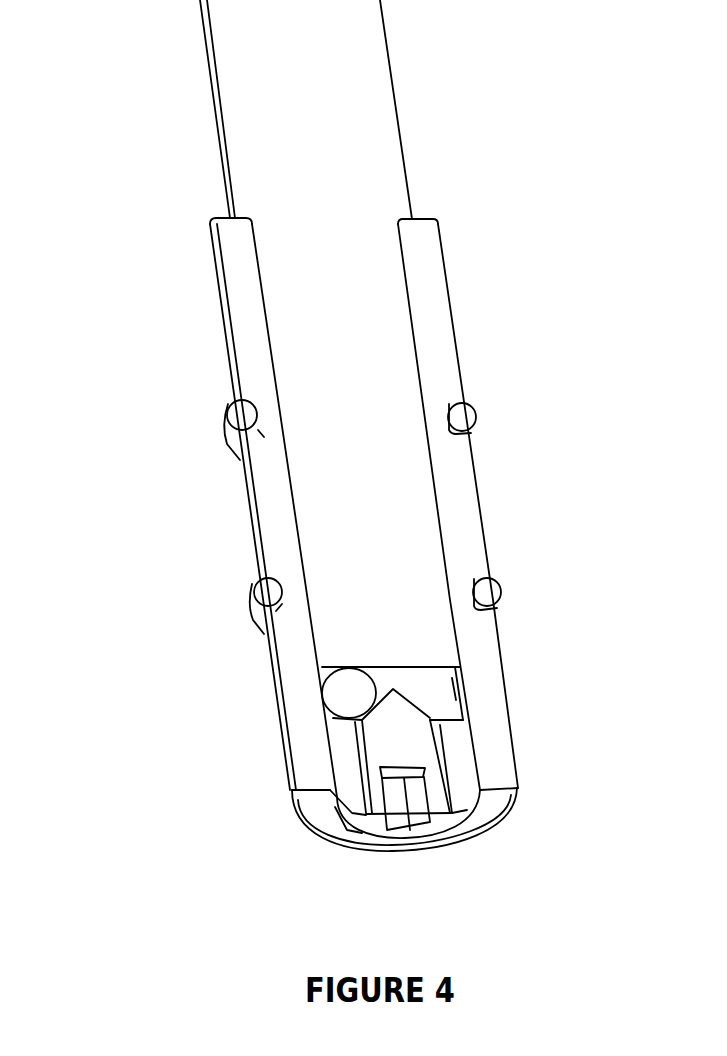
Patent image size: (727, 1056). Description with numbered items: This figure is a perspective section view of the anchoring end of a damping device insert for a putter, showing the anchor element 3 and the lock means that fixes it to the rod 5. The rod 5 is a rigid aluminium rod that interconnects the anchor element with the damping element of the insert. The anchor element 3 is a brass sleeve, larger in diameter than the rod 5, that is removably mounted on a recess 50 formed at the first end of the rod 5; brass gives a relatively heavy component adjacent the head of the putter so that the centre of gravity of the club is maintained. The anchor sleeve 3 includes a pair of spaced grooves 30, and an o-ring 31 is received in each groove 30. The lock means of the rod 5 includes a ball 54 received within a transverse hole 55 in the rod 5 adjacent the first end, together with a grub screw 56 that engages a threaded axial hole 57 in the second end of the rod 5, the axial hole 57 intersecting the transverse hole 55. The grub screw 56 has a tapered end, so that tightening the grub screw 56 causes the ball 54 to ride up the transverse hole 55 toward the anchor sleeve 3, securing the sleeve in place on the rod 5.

The anchor element 3 is at (156, 596).
The rod 5 is at (293, 88).
The grooves 30 is at (280, 577).
The o-ring 31 is at (487, 588).
The recess 50 is at (336, 431).
The ball 54 is at (333, 688).
The transverse hole 55 is at (430, 677).
The grub screw 56 is at (415, 750).
The threaded axial hole 57 is at (355, 748).